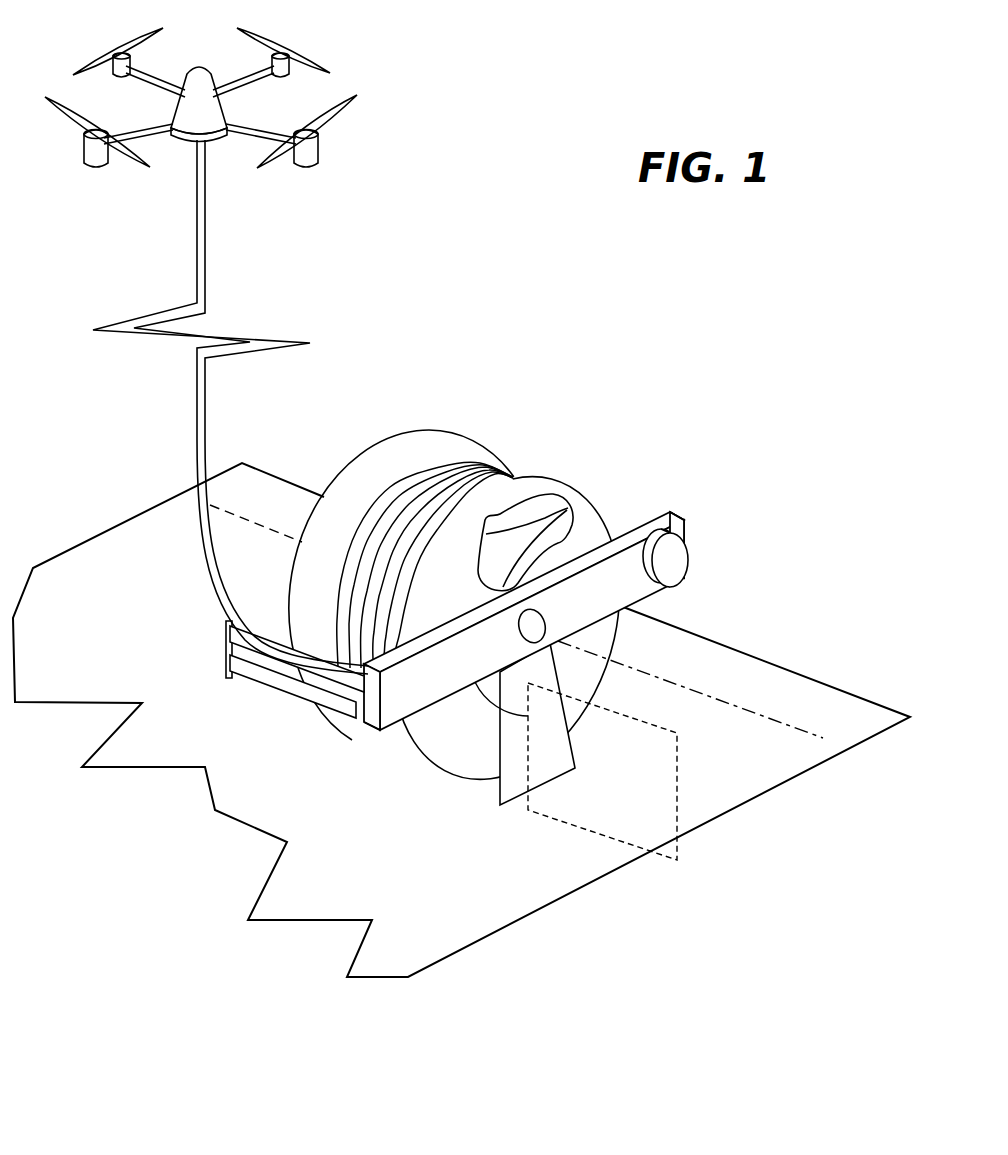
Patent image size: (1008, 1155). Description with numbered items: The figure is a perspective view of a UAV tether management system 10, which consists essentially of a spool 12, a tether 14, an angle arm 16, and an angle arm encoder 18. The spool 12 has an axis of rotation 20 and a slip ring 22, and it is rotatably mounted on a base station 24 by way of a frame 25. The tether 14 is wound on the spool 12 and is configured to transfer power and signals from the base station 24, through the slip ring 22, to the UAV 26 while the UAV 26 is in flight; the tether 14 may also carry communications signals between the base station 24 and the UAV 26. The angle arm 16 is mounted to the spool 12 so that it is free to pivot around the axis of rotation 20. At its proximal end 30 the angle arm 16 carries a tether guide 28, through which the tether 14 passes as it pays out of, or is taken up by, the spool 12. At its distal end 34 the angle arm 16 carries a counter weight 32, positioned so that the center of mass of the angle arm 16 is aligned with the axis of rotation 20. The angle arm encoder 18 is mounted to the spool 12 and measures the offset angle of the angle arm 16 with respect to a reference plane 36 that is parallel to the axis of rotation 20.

The UAV tether management system 10 is at (491, 595).
The spool 12 is at (421, 436).
The tether 14 is at (197, 430).
The angle arm 16 is at (620, 536).
The angle arm encoder 18 is at (545, 626).
The axis of rotation 20 is at (775, 719).
The slip ring 22 is at (562, 504).
The base station 24 is at (820, 685).
The frame 25 is at (492, 800).
The UAV 26 is at (322, 152).
The tether guide 28 is at (258, 684).
The proximal end 30 is at (383, 750).
The counter weight 32 is at (690, 560).
The distal end 34 is at (700, 499).
The reference plane 36 is at (660, 862).